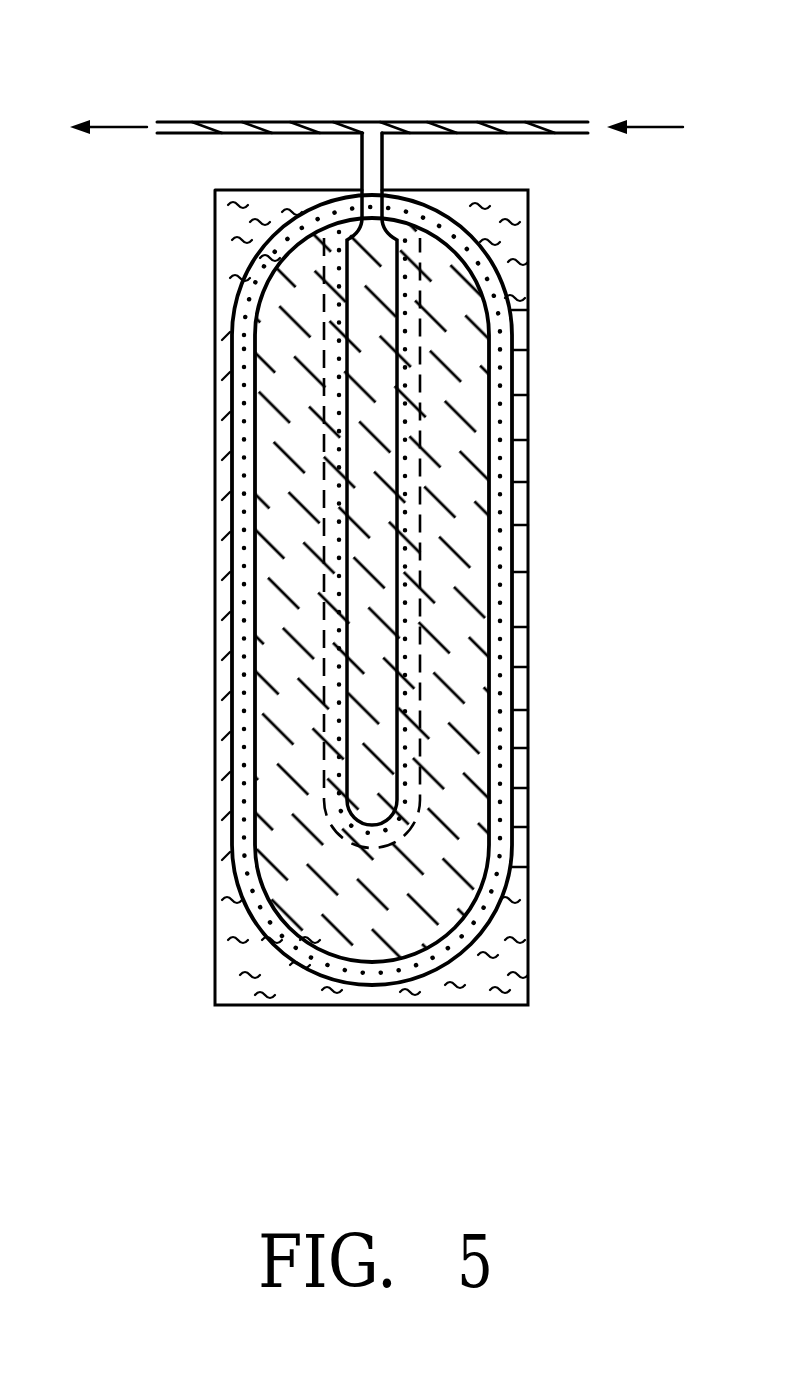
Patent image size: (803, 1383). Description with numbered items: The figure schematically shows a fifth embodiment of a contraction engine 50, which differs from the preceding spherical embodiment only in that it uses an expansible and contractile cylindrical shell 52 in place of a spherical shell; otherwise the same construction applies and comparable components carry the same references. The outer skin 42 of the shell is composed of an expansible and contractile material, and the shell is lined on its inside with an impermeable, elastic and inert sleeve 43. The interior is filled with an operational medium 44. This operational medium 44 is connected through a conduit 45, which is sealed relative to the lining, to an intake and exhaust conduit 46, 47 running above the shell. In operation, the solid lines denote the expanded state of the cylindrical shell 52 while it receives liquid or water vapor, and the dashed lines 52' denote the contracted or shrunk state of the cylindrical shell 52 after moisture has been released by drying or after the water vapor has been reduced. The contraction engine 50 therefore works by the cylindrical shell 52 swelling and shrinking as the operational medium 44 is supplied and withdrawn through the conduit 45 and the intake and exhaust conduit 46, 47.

The outer skin 42 is at (345, 993).
The sleeve 43 is at (353, 963).
The operational medium 44 is at (367, 950).
The conduit 45 is at (387, 183).
The intake conduit 46 is at (483, 127).
The exhaust conduit 47 is at (273, 123).
The contraction engine 50 is at (138, 782).
The cylindrical shell 52 is at (425, 600).
The contracted state of the cylindrical shell 52' is at (483, 533).